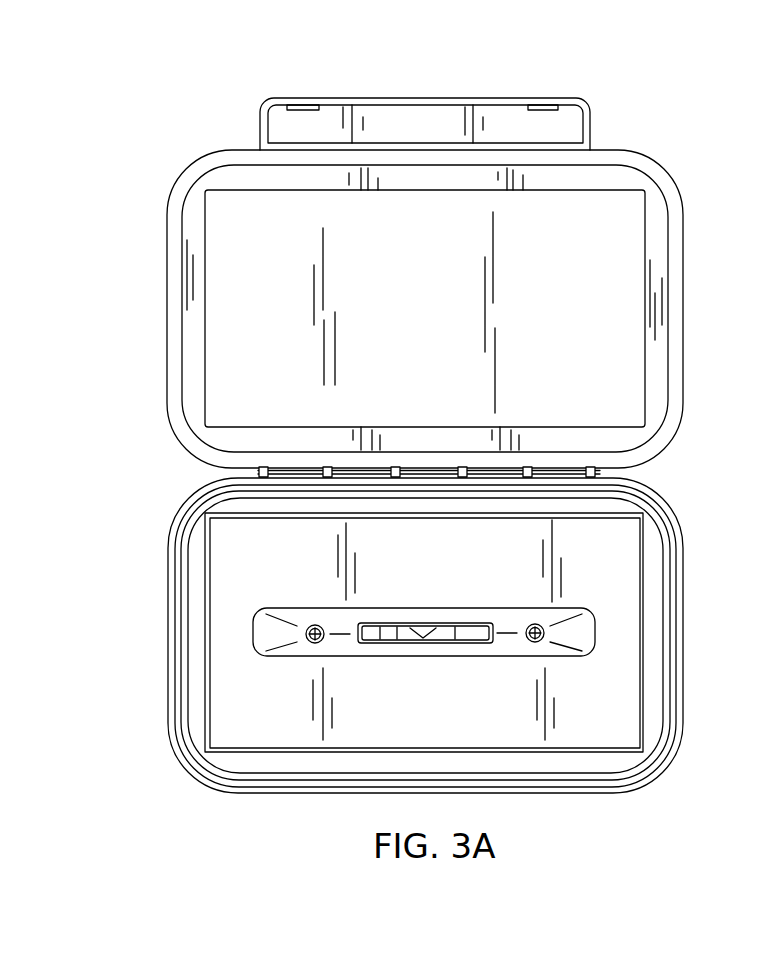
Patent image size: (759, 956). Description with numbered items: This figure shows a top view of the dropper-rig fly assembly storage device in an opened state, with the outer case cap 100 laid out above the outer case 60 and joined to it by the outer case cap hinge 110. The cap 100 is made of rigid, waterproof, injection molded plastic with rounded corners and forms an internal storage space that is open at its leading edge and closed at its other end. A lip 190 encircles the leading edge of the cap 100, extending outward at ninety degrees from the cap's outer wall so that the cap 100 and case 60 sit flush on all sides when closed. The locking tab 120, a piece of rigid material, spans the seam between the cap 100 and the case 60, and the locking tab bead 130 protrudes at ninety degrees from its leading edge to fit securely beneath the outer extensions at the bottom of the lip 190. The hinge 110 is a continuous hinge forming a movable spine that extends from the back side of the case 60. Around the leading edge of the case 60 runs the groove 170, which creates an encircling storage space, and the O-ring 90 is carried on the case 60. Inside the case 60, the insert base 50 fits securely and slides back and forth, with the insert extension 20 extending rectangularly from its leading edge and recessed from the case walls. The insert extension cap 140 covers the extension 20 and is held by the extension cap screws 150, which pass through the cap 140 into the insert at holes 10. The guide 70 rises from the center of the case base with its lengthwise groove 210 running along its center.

The outer case cap 100 is at (685, 250).
The outer case cap hinge 110 is at (450, 147).
The locking tab 120 is at (567, 125).
The locking tab bead 130 is at (303, 103).
The lip 190 is at (186, 183).
The insert base 50 is at (225, 532).
The groove 170 is at (680, 578).
The O-ring 90 is at (673, 637).
The outer case 60 is at (683, 693).
The insert extension 20 is at (317, 624).
The extension cap screws 150 is at (312, 645).
The insert extension cap 140 is at (518, 645).
The guide 70 is at (460, 622).
The holes 10 is at (322, 646).
The groove 210 is at (440, 643).